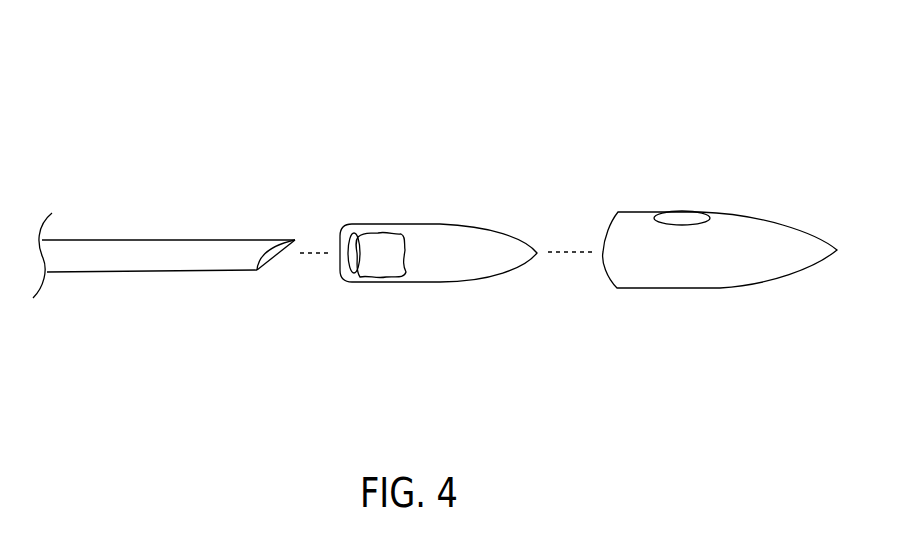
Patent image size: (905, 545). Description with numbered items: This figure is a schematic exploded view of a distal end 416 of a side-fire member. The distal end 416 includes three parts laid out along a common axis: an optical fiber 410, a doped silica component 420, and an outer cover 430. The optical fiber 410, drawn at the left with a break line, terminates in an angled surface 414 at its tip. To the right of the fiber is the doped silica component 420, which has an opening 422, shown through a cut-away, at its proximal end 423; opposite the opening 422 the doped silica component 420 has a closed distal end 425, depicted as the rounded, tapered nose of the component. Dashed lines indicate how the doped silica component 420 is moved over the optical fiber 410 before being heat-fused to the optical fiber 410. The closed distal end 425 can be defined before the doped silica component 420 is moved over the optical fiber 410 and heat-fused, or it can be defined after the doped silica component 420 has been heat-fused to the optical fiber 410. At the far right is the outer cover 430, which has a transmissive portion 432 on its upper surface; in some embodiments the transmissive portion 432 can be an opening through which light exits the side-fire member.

The optical fiber 410 is at (173, 253).
The angled surface 414 is at (277, 255).
The distal end 416 is at (502, 60).
The doped silica component 420 is at (428, 253).
The opening 422 is at (356, 248).
The proximal end 423 is at (372, 308).
The closed distal end 425 is at (513, 308).
The outer cover 430 is at (743, 233).
The transmissive portion 432 is at (682, 215).